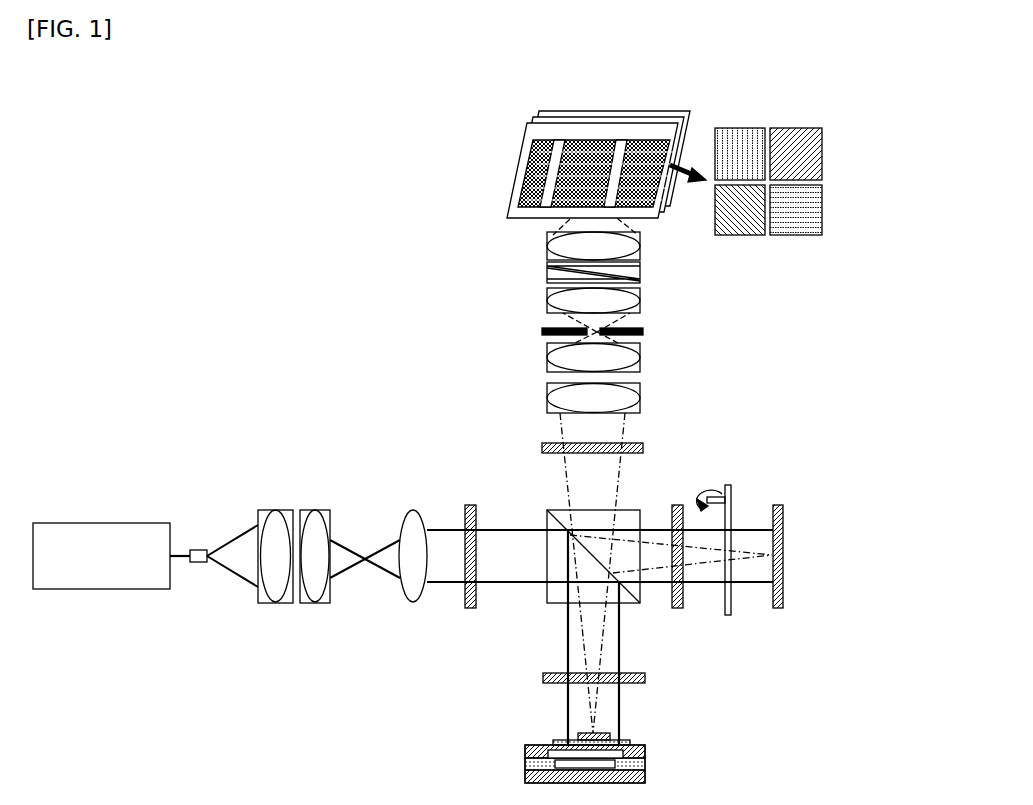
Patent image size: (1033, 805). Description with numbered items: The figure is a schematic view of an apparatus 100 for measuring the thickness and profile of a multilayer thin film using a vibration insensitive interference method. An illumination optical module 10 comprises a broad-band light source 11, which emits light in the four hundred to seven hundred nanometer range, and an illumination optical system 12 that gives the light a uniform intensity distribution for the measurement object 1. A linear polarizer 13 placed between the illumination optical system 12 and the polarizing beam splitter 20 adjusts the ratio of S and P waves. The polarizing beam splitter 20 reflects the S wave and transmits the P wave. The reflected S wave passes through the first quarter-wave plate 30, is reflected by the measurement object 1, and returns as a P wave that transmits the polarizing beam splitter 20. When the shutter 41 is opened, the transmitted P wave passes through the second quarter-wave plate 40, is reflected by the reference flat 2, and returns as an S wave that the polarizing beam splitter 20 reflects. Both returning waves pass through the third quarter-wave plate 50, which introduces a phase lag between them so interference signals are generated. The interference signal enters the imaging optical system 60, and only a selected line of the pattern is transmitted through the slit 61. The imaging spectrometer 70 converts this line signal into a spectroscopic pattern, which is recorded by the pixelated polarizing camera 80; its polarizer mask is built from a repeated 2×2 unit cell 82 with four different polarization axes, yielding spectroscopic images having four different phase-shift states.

The apparatus for measuring a thickness and a profile of a multilayer thin film 100 is at (242, 159).
The illumination optical module 10 is at (256, 640).
The broad-band light source 11 is at (101, 523).
The illumination optical system 12 is at (260, 495).
The linear polarizer 13 is at (470, 505).
The polarizing beam splitter 20 is at (541, 604).
The first quarter-wave plate 30 is at (645, 678).
The second quarter-wave plate 40 is at (683, 606).
The shutter 41 is at (733, 501).
The reference flat 2 is at (778, 505).
The third quarter-wave plate 50 is at (643, 447).
The imaging optical system 60 is at (653, 343).
The slit 61 is at (633, 327).
The imaging spectrometer 70 is at (530, 232).
The pixelated polarizing camera 80 is at (487, 105).
The 2×2 unit cell 82 is at (826, 125).
The measurement object 1 is at (655, 752).